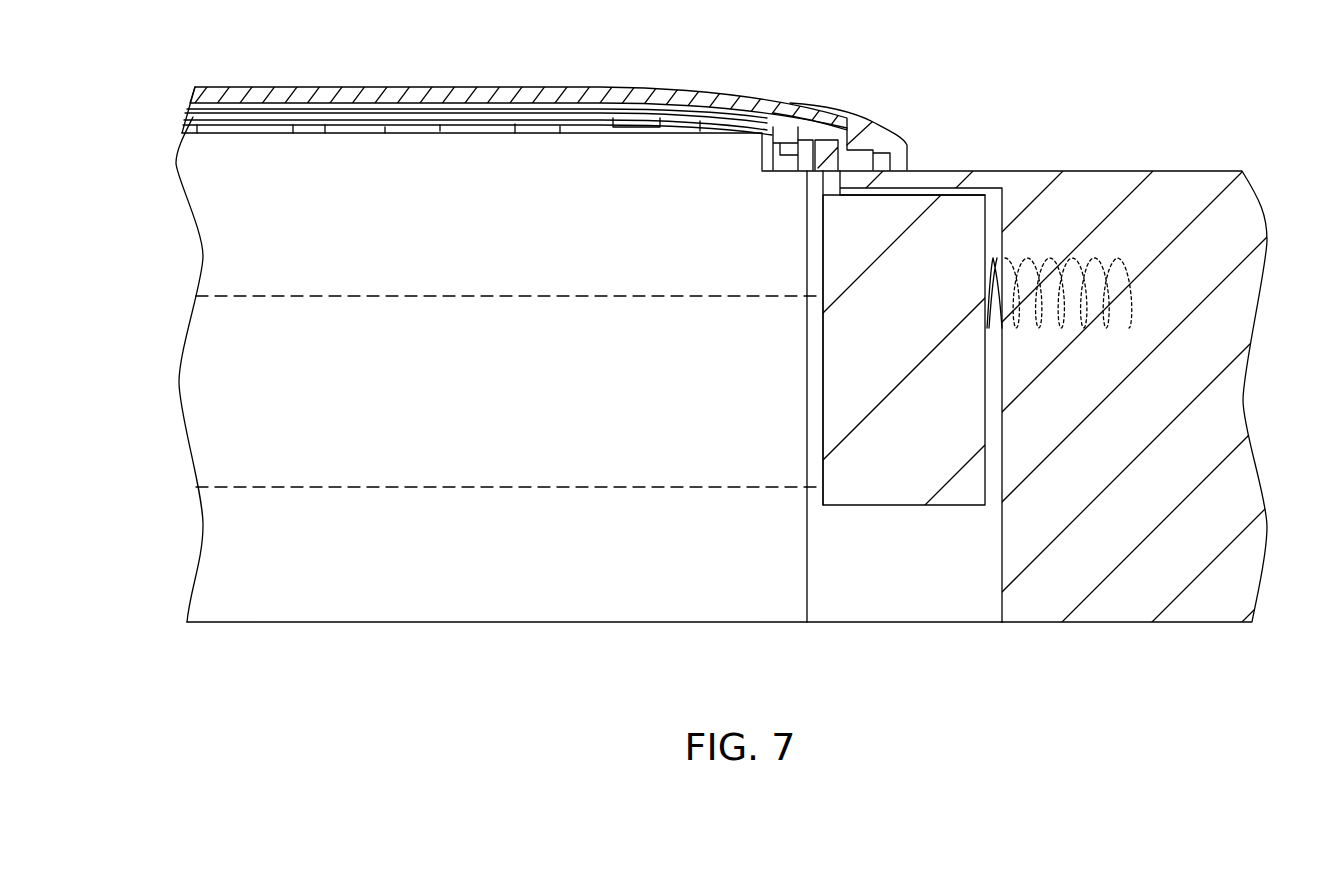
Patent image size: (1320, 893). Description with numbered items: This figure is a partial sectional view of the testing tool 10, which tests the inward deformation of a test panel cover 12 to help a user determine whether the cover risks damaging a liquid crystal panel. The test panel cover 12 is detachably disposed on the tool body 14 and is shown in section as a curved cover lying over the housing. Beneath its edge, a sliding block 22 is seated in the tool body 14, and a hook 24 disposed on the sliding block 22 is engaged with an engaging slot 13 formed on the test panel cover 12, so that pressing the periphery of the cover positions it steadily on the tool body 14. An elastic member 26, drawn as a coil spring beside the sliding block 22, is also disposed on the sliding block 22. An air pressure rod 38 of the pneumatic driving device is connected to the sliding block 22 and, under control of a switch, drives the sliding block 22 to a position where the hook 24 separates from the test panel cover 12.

The testing tool 10 is at (1128, 622).
The test panel cover 12 is at (575, 100).
The engaging slot 13 is at (805, 140).
The tool body 14 is at (1183, 200).
The sliding block 22 is at (950, 217).
The hook 24 is at (827, 143).
The elastic member 26 is at (1090, 258).
The air pressure rod 38 is at (467, 458).